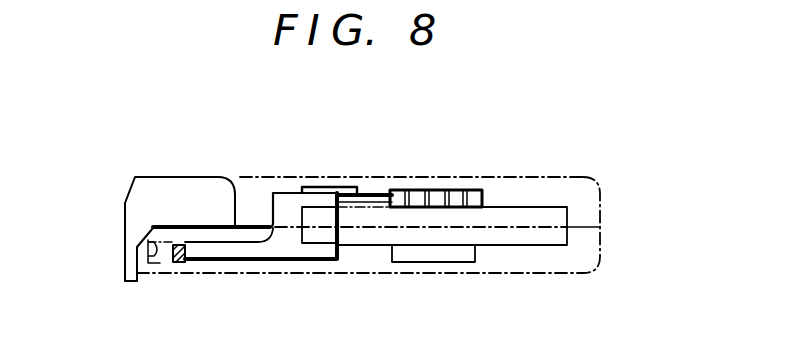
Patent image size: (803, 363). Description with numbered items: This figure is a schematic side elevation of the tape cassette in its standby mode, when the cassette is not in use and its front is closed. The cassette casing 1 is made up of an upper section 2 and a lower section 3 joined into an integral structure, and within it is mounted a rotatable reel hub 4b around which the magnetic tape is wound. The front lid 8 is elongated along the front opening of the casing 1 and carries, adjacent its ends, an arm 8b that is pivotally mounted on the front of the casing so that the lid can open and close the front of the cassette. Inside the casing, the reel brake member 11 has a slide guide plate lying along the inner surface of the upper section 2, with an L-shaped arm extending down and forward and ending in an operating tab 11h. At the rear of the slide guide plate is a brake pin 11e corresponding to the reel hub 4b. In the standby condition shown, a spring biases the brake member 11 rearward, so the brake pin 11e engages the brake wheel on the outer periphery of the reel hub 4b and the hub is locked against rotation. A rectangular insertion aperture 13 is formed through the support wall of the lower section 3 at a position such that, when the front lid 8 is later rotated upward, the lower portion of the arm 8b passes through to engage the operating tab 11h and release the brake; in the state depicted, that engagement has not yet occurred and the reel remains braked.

The cassette casing 1 is at (647, 180).
The upper section 2 is at (601, 213).
The lower section 3 is at (601, 240).
The reel hub 4b is at (438, 189).
The front lid 8 is at (130, 190).
The arm 8b is at (195, 190).
The reel brake member 11 is at (317, 185).
The brake pin 11e is at (368, 190).
The operating tab 11h is at (175, 255).
The insertion aperture 13 is at (153, 268).